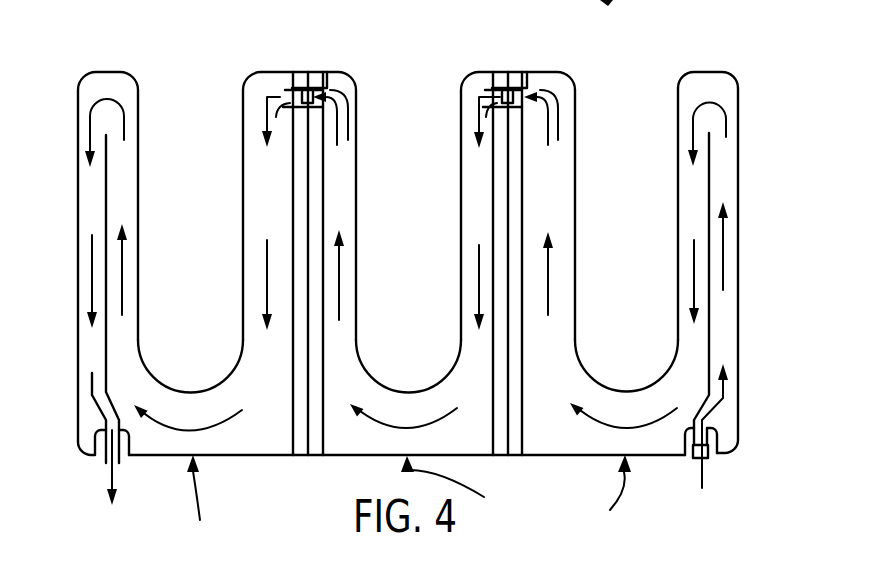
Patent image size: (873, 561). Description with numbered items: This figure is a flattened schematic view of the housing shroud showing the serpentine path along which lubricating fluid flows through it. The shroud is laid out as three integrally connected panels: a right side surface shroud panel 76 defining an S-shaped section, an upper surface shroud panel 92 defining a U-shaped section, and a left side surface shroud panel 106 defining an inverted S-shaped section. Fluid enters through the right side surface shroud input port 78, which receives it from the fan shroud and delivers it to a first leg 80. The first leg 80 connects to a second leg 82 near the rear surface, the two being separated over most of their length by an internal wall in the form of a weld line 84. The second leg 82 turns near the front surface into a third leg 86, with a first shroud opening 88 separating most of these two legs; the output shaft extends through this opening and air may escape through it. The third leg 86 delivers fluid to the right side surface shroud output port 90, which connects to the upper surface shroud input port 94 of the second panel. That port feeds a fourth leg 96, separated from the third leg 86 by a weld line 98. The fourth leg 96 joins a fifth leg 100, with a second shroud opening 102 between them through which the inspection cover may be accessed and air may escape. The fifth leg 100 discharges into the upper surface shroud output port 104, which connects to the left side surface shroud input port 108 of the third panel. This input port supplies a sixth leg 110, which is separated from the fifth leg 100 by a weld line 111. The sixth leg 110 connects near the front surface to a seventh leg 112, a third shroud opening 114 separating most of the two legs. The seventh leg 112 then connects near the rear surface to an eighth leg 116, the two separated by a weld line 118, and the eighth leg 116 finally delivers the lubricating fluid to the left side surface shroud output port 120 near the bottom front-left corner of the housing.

The right side surface shroud panel 76 is at (613, 499).
The right side surface shroud input port 78 is at (707, 460).
The first leg 80 is at (723, 180).
The second leg 82 is at (698, 202).
The weld line 84 is at (718, 327).
The third leg 86 is at (552, 330).
The first shroud opening 88 is at (628, 392).
The right side surface shroud output port 90 is at (518, 72).
The upper surface shroud panel 92 is at (450, 488).
The upper surface shroud input port 94 is at (500, 72).
The fourth leg 96 is at (478, 178).
The weld line 98 is at (507, 203).
The fifth leg 100 is at (345, 262).
The second shroud opening 102 is at (406, 392).
The upper surface shroud output port 104 is at (322, 72).
The left side surface shroud panel 106 is at (198, 502).
The left side surface shroud input port 108 is at (300, 72).
The sixth leg 110 is at (267, 182).
The weld line 111 is at (307, 210).
The seventh leg 112 is at (128, 260).
The third shroud opening 114 is at (190, 392).
The eighth leg 116 is at (93, 193).
The weld line 118 is at (107, 353).
The left side surface shroud output port 120 is at (107, 462).